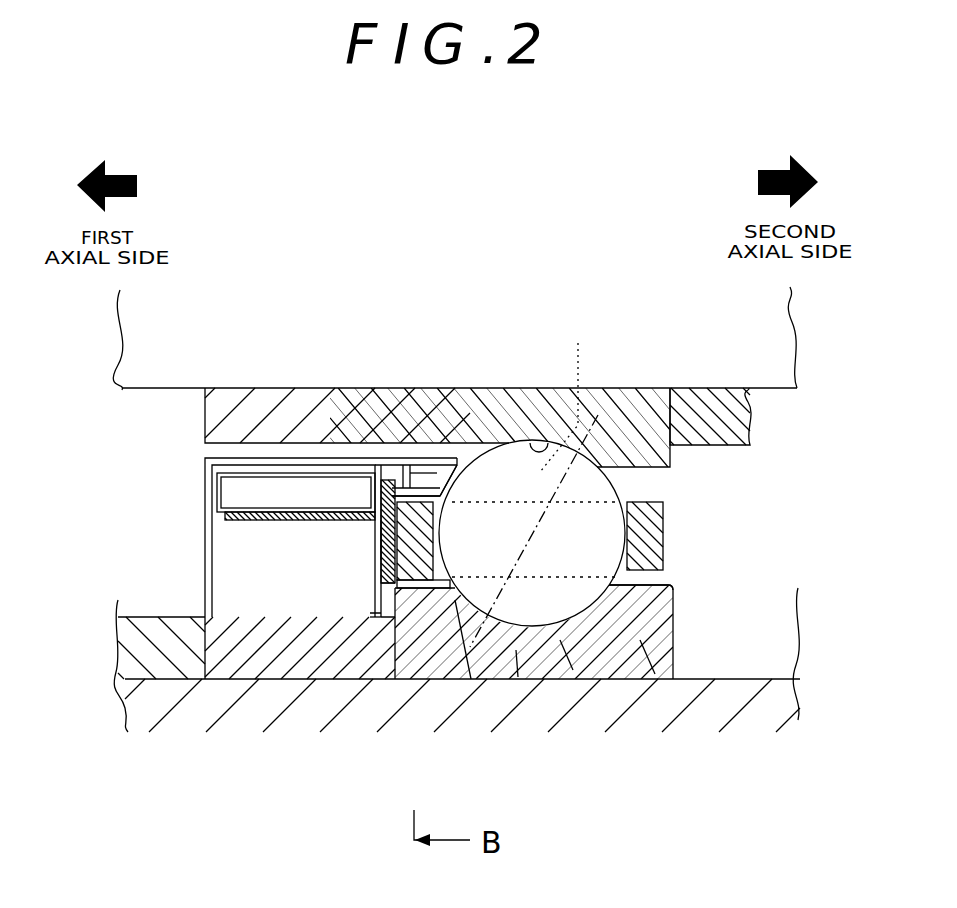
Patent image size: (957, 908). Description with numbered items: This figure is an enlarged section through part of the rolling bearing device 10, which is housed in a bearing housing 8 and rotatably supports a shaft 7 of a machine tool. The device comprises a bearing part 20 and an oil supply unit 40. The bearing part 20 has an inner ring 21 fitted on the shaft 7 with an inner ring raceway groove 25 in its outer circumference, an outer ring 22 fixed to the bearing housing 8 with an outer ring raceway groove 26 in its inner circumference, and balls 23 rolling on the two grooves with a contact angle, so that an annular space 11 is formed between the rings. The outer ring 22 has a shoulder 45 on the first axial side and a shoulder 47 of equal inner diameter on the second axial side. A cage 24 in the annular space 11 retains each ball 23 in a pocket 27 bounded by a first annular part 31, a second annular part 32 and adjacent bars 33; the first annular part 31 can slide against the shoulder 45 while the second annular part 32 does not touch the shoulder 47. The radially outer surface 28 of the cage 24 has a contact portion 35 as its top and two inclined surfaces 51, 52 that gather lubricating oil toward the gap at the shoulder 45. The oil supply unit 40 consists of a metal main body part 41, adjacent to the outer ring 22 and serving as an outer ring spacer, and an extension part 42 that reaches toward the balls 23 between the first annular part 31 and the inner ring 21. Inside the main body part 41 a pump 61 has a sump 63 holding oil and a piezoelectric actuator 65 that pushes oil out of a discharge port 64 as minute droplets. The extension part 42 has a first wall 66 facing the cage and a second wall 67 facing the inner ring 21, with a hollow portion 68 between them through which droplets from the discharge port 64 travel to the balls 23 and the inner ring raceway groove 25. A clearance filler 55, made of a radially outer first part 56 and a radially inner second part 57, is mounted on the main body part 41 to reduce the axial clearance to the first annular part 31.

The shaft 7 is at (140, 392).
The bearing housing 8 is at (135, 655).
The rolling bearing device 10 is at (690, 650).
The annular space 11 is at (654, 482).
The bearing part 20 is at (613, 688).
The inner ring 21 is at (613, 417).
The outer ring 22 is at (548, 612).
The ball 23 is at (564, 626).
The cage 24 is at (418, 592).
The inner ring raceway groove 25 is at (535, 493).
The outer ring raceway groove 26 is at (516, 650).
The pocket 27 is at (511, 486).
The radially outer surface 28 is at (471, 680).
The first annular part 31 is at (383, 563).
The second annular part 32 is at (665, 553).
The bar 33 is at (566, 394).
The contact portion 35 is at (403, 592).
The oil supply unit 40 is at (265, 683).
The main body part 41 is at (205, 520).
The extension part 42 is at (408, 452).
The shoulder 45 is at (437, 592).
The shoulder 47 is at (655, 600).
The inclined surface 51 is at (375, 622).
The inclined surface 52 is at (655, 674).
The clearance filler 55 is at (381, 542).
The first part 56 is at (381, 583).
The second part 57 is at (381, 522).
The pump 61 is at (244, 540).
The sump 63 is at (311, 500).
The discharge port 64 is at (382, 450).
The actuator 65 is at (243, 522).
The first wall 66 is at (447, 468).
The second wall 67 is at (430, 492).
The hollow portion 68 is at (407, 477).